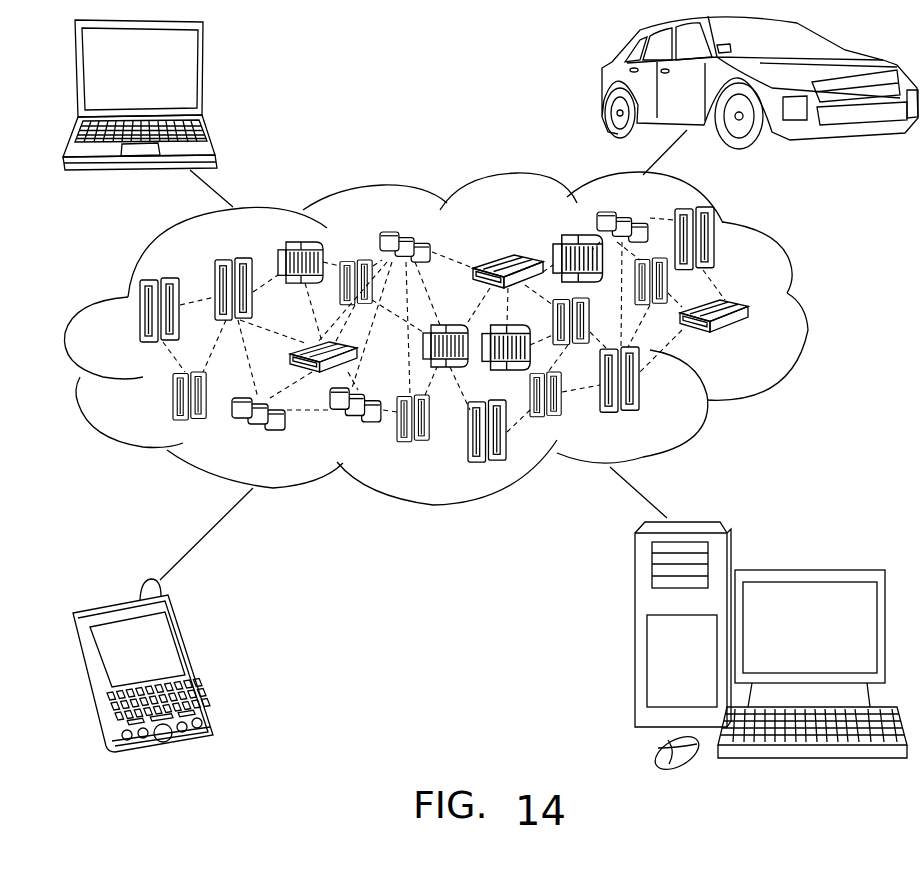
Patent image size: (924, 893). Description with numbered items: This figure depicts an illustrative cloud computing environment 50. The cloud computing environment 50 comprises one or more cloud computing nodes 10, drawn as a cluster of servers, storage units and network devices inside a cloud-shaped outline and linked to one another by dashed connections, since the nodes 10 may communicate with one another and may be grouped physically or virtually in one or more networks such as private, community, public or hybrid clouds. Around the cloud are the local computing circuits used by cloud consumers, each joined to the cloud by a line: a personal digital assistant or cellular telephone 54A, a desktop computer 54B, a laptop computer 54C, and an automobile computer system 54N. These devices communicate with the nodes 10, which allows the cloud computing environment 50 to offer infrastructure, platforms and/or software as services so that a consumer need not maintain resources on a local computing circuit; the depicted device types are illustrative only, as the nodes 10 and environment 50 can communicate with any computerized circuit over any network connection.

The cloud computing nodes 10 is at (751, 340).
The cloud computing environment 50 is at (805, 312).
The personal digital assistant (PDA) or cellular telephone 54A is at (198, 661).
The desktop computer 54B is at (803, 570).
The laptop computer 54C is at (203, 77).
The automobile computer system 54N is at (603, 84).